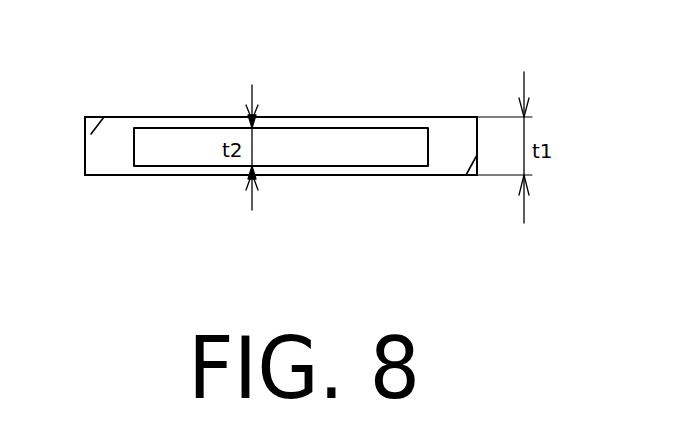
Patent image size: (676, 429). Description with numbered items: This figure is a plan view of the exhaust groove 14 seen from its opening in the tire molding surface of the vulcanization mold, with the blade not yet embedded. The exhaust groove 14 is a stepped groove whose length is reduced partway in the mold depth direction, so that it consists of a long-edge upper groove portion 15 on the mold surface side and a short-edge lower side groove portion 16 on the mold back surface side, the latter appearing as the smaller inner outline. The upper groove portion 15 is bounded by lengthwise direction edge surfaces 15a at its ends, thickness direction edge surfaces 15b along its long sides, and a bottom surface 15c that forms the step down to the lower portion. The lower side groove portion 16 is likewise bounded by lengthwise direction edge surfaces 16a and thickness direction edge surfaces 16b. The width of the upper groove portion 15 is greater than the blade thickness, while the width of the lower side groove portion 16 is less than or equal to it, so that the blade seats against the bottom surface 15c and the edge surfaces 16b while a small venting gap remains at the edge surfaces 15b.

The exhaust groove 14 is at (383, 117).
The upper groove portion 15 is at (332, 117).
The lengthwise direction edge surface 15a is at (104, 117).
The thickness direction edge surface 15b is at (179, 118).
The bottom surface 15c is at (455, 135).
The lower side groove portion 16 is at (337, 167).
The lengthwise direction edge surface 16a is at (145, 150).
The thickness direction edge surface 16b is at (282, 128).